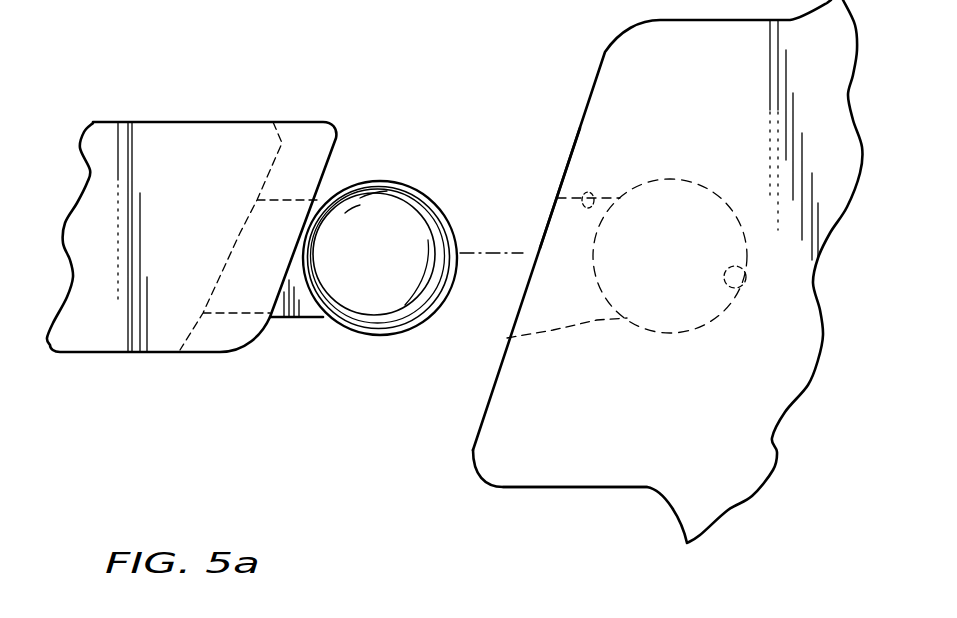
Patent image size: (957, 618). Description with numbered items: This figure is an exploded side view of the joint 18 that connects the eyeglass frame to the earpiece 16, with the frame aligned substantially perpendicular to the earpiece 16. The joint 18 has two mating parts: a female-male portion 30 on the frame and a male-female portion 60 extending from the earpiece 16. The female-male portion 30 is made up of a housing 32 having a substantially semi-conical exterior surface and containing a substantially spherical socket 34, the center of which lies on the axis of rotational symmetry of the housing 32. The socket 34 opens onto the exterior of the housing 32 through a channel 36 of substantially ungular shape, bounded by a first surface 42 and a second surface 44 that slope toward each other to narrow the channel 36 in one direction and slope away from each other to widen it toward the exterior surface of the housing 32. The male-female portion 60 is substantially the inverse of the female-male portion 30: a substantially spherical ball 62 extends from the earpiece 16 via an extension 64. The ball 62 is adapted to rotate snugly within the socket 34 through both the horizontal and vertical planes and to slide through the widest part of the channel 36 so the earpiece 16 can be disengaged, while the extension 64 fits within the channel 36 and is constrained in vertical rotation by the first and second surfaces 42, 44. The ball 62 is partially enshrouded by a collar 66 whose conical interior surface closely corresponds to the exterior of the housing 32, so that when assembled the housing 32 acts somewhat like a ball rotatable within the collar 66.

The earpiece 16 is at (110, 353).
The joint 18 is at (354, 60).
The female-male portion 30 is at (706, 357).
The housing 32 is at (511, 488).
The socket 34 is at (737, 288).
The channel 36 is at (560, 227).
The first surface 42 is at (590, 193).
The second surface 44 is at (550, 328).
The male-female portion 60 is at (306, 350).
The ball 62 is at (377, 300).
The extension 64 is at (285, 318).
The collar 66 is at (297, 120).